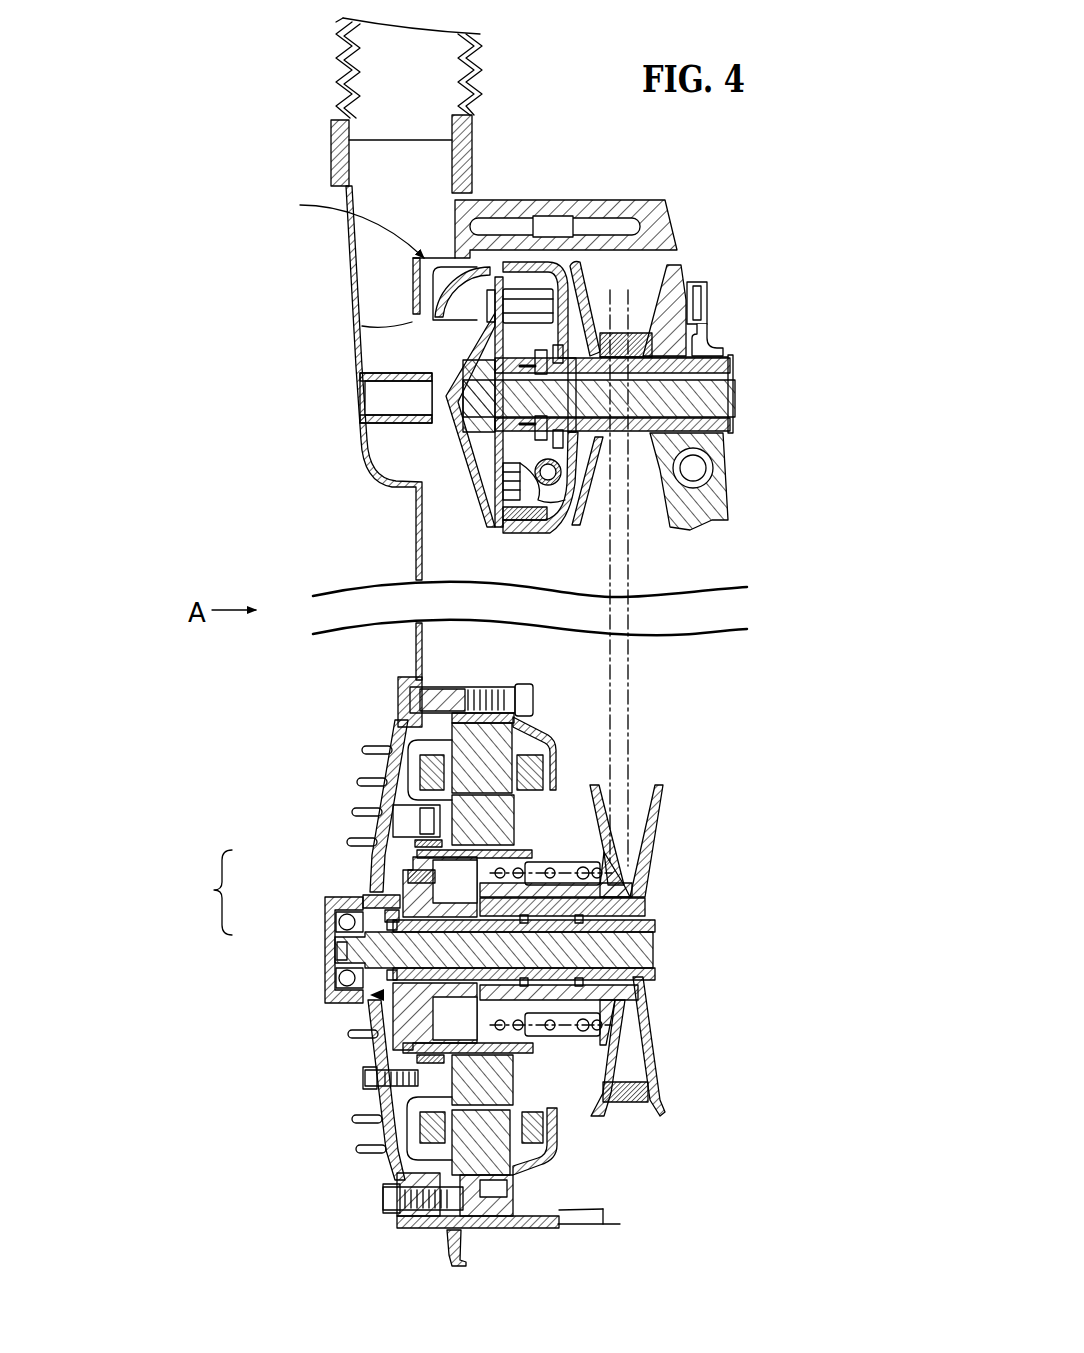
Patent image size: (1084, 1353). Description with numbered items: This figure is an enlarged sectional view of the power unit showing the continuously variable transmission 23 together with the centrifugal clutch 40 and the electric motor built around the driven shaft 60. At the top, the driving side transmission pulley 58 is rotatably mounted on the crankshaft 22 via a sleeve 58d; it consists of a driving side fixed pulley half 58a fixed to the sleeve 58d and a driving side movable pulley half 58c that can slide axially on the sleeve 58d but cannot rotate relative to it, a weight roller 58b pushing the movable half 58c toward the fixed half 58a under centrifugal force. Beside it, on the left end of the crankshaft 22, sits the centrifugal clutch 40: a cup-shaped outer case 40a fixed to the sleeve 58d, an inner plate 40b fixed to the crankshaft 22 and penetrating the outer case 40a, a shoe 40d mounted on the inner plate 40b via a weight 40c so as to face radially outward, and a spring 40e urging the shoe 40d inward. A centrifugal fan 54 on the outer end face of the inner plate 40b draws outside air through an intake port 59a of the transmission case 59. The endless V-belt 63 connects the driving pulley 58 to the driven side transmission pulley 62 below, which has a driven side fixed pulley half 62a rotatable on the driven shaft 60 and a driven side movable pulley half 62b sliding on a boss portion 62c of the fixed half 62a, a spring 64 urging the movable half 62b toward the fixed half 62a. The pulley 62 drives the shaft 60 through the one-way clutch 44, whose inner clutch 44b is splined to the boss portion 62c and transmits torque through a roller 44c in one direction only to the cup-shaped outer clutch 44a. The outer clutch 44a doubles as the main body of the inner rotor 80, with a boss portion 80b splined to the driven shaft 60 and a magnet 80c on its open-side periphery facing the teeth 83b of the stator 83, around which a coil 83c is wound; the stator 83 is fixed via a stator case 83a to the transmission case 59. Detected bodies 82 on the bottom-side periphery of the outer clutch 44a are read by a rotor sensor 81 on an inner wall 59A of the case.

The crankshaft 22 is at (722, 400).
The continuously variable transmission 23 is at (642, 584).
The centrifugal clutch 40 is at (526, 248).
The outer case 40a is at (567, 533).
The inner plate 40b is at (478, 448).
The weight 40c is at (510, 534).
The shoe 40d is at (530, 540).
The spring 40e is at (600, 440).
The one-way clutch 44 is at (283, 926).
The outer clutch 44a is at (393, 862).
The inner clutch 44b is at (340, 918).
The roller 44c is at (400, 880).
The centrifugal fan 54 is at (346, 223).
The driving side transmission pulley 58 is at (685, 258).
The driving side fixed pulley half 58a is at (586, 292).
The weight roller 58b is at (705, 475).
The driving side movable pulley half 58c is at (690, 275).
The sleeve 58d is at (722, 370).
The transmission case 59 is at (345, 480).
The intake port 59a is at (358, 324).
The inner wall 59A is at (397, 735).
The driven shaft 60 is at (650, 945).
The driven side transmission pulley 62 is at (668, 777).
The driven side fixed pulley half 62a is at (668, 790).
The driven side movable pulley half 62b is at (595, 790).
The boss portion 62c is at (628, 910).
The endless V-belt 63 is at (628, 670).
The spring 64 is at (555, 865).
The inner rotor 80 is at (370, 995).
The boss portion 80b is at (425, 988).
The magnet 80c is at (505, 1077).
The rotor sensor 81 is at (401, 822).
The detected bodies 82 is at (395, 843).
The stator 83 is at (428, 1228).
The stator case 83a is at (512, 1228).
The teeth 83b is at (474, 1230).
The coil 83c is at (545, 1140).